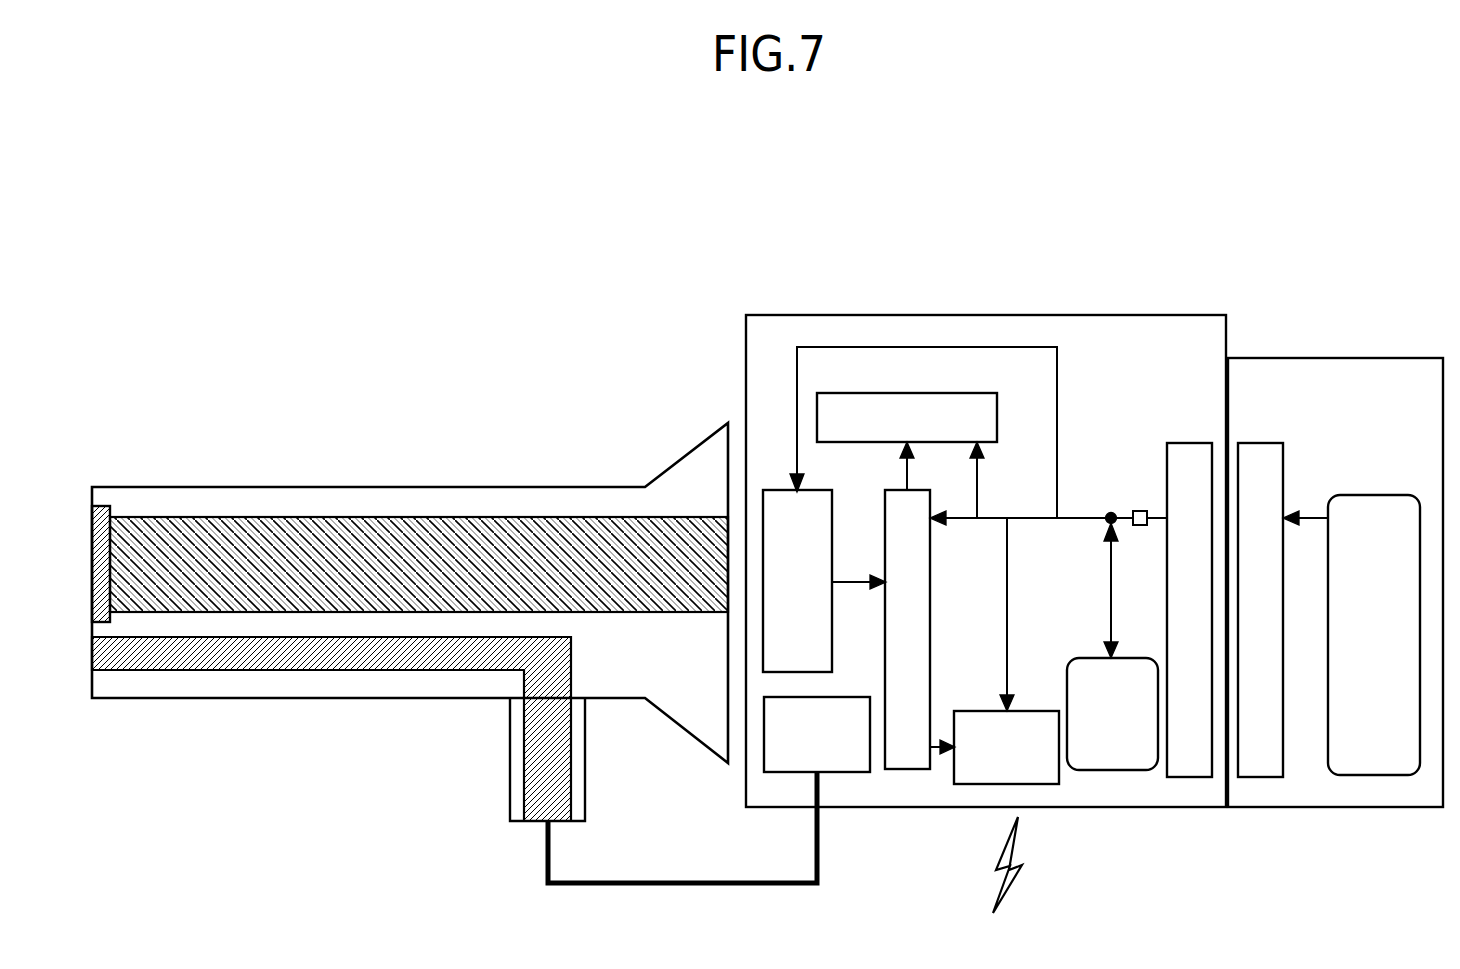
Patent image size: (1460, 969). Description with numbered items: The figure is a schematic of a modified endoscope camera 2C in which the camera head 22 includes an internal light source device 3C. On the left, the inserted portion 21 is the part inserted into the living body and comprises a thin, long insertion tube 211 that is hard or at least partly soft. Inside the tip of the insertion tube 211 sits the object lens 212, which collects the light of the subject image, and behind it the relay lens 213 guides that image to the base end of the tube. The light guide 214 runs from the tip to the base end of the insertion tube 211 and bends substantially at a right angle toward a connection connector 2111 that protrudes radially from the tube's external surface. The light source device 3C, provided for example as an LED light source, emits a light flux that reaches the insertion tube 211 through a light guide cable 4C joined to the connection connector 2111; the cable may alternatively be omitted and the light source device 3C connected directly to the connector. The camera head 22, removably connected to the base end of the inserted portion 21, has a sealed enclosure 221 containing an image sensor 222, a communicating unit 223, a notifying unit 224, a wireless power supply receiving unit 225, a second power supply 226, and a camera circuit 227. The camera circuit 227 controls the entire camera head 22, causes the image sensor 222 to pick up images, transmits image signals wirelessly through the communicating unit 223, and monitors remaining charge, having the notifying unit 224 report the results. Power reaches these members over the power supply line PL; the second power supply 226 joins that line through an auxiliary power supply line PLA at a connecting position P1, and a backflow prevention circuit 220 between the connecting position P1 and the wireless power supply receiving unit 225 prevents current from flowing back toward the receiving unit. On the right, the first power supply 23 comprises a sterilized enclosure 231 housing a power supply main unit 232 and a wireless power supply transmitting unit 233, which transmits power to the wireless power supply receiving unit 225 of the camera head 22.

The endoscope camera 2C is at (798, 205).
The inserted portion 21 is at (212, 487).
The insertion tube 211 is at (325, 487).
The object lens 212 is at (100, 505).
The relay lens 213 is at (418, 545).
The light guide 214 is at (325, 665).
The connection connector 2111 is at (585, 786).
The light source device 3C is at (790, 774).
The light guide cable 4C is at (690, 883).
The camera head 22 is at (868, 313).
The sealed enclosure 221 is at (975, 313).
The image sensor 222 is at (812, 490).
The communicating unit 223 is at (967, 786).
The notifying unit 224 is at (924, 393).
The wireless power supply receiving unit 225 is at (1192, 779).
The second power supply 226 is at (1113, 772).
The camera circuit 227 is at (909, 771).
The backflow prevention circuit 220 is at (1138, 507).
The connecting position P1 is at (1108, 512).
The power supply line PL is at (1084, 524).
The auxiliary power supply line PLA is at (1109, 600).
The first power supply 23 is at (1390, 356).
The sterilized enclosure 231 is at (1280, 356).
The power supply main unit 232 is at (1381, 777).
The wireless power supply transmitting unit 233 is at (1263, 779).